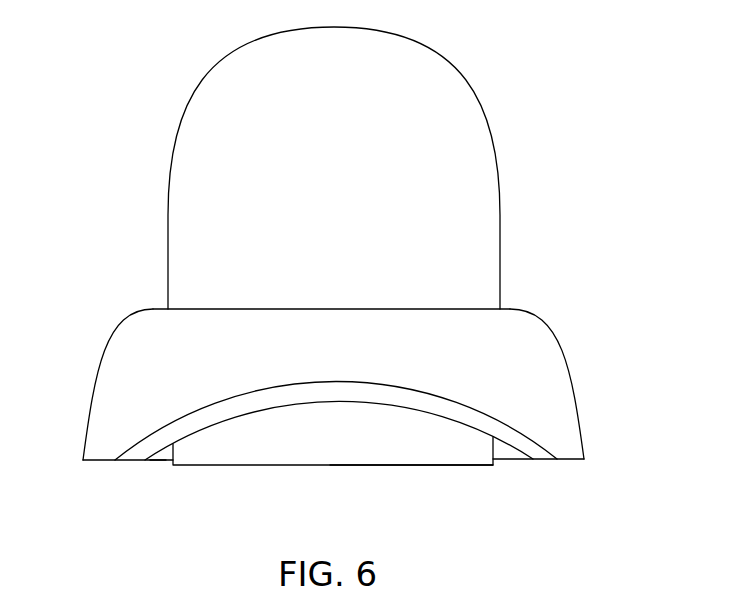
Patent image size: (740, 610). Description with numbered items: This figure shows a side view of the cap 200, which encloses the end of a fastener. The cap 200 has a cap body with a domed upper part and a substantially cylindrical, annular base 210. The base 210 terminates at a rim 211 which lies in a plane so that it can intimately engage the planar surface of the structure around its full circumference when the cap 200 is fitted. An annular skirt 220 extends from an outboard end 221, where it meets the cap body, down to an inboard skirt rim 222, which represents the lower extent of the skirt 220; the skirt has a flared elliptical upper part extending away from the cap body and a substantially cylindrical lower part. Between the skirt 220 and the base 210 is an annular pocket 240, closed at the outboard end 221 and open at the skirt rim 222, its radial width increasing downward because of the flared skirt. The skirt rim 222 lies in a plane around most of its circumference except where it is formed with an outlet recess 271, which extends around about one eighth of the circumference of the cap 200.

The cap 200 is at (450, 105).
The annular skirt 220 is at (562, 399).
The outboard end of skirt 221 is at (509, 312).
The skirt rim 222 is at (98, 462).
The outlet recess 271 is at (193, 419).
The base 210 is at (283, 452).
The rim 211 is at (473, 468).
The annular pocket 240 is at (158, 461).